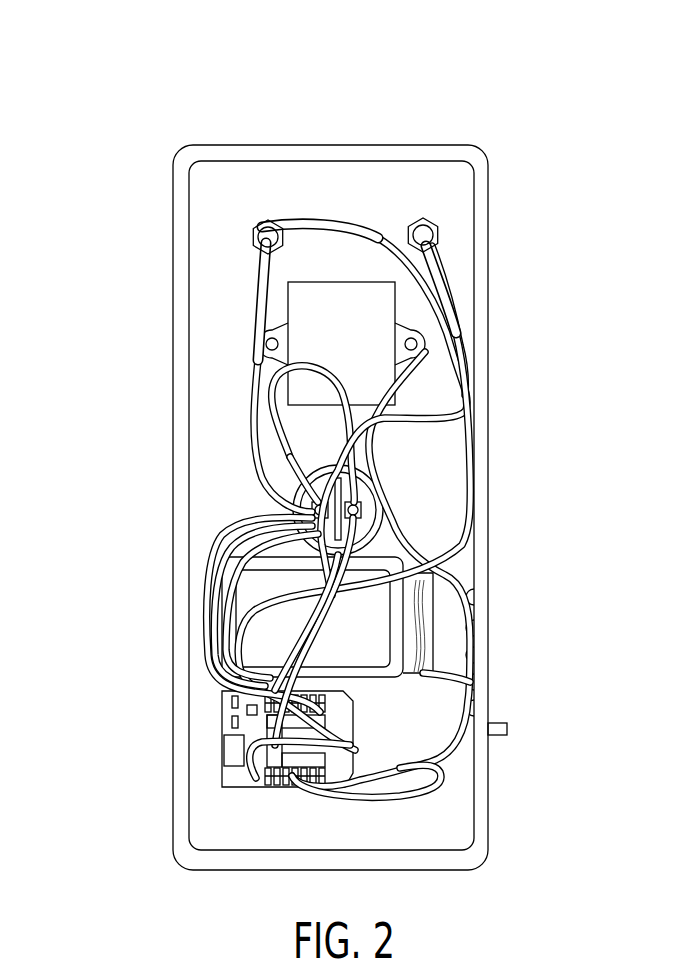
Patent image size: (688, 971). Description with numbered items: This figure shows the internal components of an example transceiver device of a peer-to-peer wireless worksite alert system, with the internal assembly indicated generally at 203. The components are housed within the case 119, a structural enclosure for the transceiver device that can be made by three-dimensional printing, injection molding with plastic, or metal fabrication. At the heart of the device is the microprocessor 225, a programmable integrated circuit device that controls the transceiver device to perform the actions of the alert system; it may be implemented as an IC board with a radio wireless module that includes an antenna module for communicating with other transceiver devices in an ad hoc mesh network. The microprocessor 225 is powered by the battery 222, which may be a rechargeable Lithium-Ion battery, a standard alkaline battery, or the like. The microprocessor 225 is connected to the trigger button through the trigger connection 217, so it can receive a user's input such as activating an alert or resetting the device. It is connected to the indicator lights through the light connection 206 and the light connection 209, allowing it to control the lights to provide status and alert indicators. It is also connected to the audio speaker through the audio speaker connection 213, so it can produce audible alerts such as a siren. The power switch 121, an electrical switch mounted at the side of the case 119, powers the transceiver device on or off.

The electronics assembly 203 is at (320, 438).
The light connection 206 is at (241, 219).
The light connection 209 is at (441, 219).
The case 119 is at (173, 382).
The audio speaker connection 213 is at (430, 345).
The trigger connection 217 is at (376, 508).
The battery 222 is at (222, 624).
The microprocessor 225 is at (220, 760).
The power switch 121 is at (510, 730).